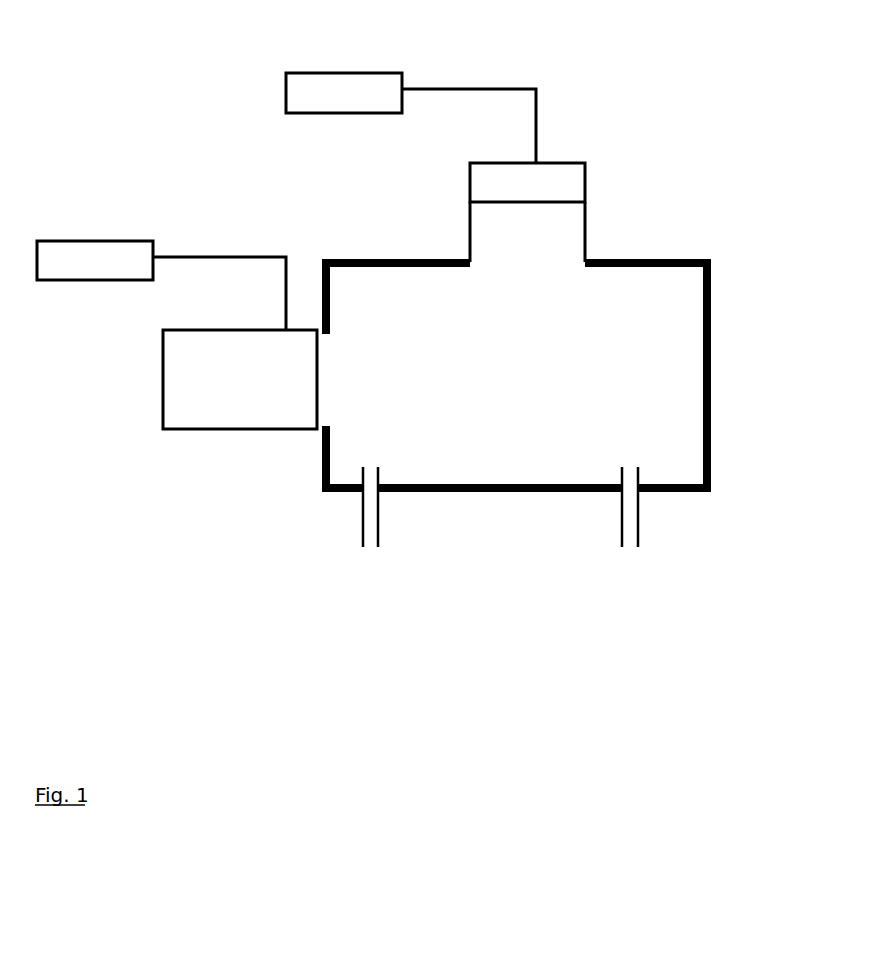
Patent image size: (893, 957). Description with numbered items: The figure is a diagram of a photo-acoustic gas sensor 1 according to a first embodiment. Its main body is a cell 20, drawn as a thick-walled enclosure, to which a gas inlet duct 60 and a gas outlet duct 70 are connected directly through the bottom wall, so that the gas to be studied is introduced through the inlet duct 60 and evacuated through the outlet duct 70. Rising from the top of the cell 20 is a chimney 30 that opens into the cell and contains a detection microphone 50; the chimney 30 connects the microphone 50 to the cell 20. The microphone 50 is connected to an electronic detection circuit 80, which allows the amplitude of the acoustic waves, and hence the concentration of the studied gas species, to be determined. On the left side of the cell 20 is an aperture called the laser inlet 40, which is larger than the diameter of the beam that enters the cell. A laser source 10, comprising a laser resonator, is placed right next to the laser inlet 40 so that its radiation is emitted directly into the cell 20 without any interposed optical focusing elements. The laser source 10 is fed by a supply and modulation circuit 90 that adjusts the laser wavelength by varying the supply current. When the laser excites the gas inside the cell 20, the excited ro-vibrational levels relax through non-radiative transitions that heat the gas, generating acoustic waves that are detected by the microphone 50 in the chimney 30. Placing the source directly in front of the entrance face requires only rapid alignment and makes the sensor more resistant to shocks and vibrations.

The chamber 1 is at (492, 510).
The laser source 10 is at (155, 413).
The cell 20 is at (710, 318).
The chimney 30 is at (470, 228).
The laser inlet 40 is at (325, 345).
The detection microphone 50 is at (585, 183).
The gas inlet duct 60 is at (362, 518).
The gas outlet duct 70 is at (640, 530).
The electronic detection circuit 80 is at (286, 74).
The supply and modulation circuit 90 is at (97, 241).